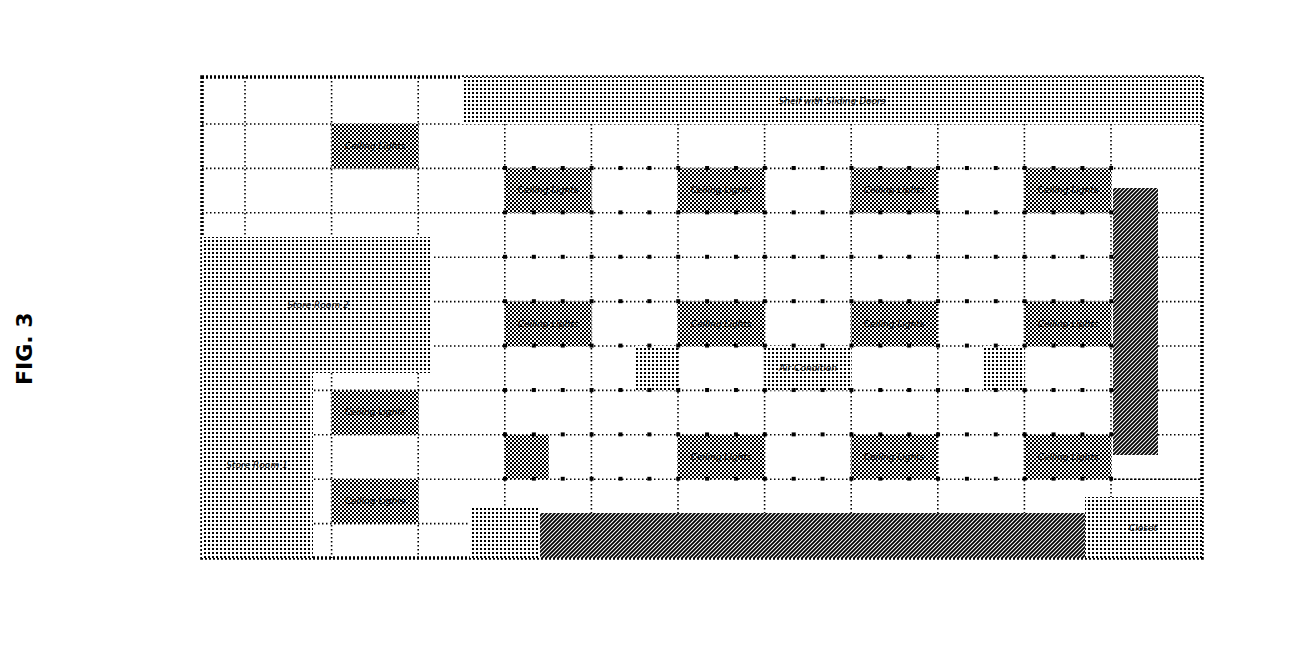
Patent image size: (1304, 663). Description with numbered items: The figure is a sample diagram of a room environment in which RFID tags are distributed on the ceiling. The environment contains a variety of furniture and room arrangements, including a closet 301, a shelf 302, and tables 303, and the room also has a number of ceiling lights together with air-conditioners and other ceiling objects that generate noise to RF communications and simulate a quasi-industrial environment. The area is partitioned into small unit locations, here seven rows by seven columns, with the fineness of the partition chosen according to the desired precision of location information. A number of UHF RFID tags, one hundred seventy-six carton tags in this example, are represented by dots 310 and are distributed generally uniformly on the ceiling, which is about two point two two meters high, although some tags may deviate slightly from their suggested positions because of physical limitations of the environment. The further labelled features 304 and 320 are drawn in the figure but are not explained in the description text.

The closet 301 is at (505, 560).
The shelf 302 is at (632, 560).
The tables 303 is at (855, 560).
The door 304 is at (1118, 465).
The RFID tags 310 is at (1107, 166).
The window wall 320 is at (1085, 237).